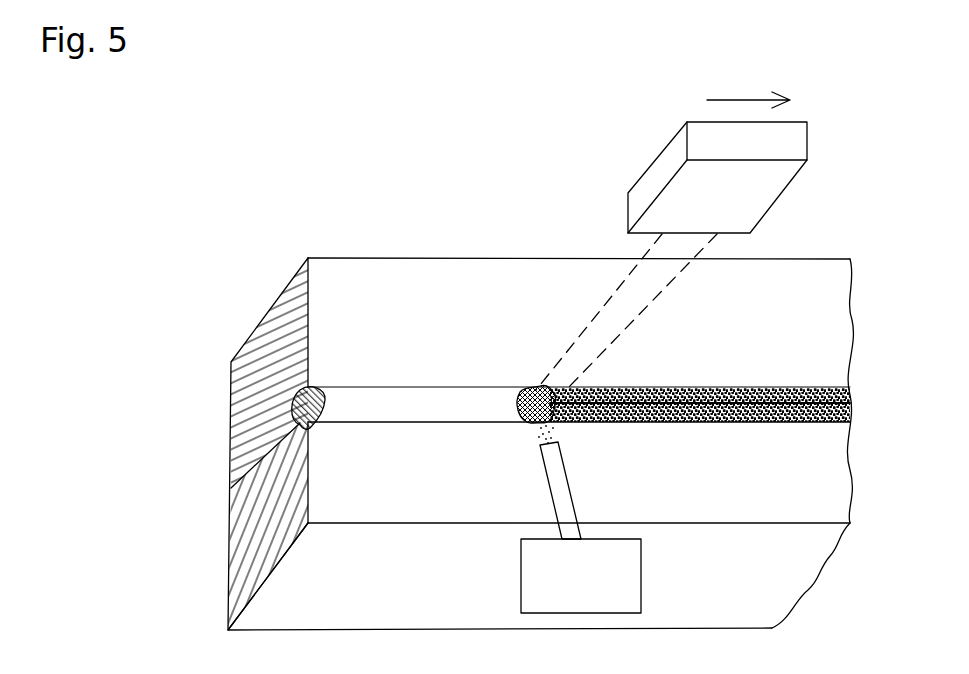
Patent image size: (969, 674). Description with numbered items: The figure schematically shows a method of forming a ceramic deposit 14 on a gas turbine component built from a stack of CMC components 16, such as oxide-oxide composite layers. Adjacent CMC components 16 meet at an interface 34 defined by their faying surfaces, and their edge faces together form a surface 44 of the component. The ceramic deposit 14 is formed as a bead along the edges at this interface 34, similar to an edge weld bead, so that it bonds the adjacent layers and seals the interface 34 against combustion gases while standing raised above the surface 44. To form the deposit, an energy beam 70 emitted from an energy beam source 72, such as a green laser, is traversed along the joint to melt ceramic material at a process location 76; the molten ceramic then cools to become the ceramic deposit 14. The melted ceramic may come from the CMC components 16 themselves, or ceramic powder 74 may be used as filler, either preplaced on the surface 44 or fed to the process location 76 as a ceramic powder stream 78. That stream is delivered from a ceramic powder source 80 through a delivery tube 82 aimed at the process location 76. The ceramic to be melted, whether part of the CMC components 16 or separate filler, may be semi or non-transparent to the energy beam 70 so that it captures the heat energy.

The ceramic deposit 14 is at (393, 398).
The CMC component 16 is at (279, 381).
The interface 34 is at (273, 454).
The surface 44 is at (721, 487).
The energy beam 70 is at (590, 328).
The energy beam source 72 is at (664, 172).
The ceramic powder 74 is at (733, 396).
The process location 76 is at (519, 392).
The ceramic powder stream 78 is at (542, 432).
The ceramic powder source 80 is at (588, 587).
The delivery tube 82 is at (568, 485).